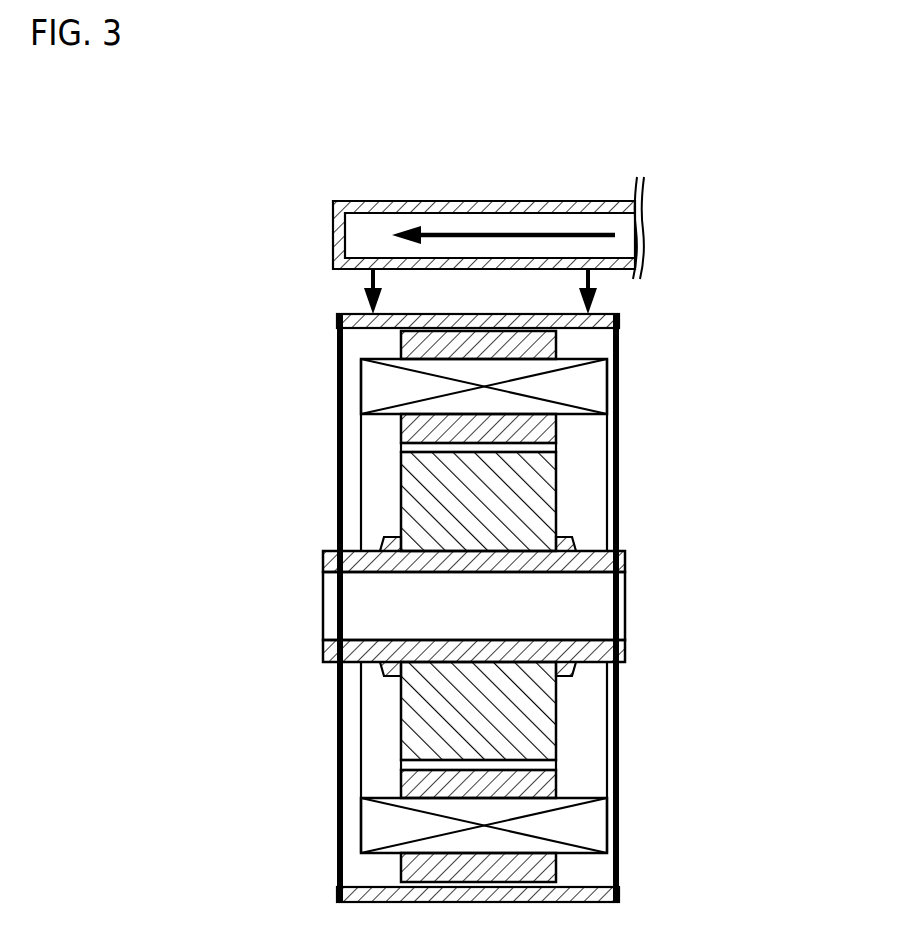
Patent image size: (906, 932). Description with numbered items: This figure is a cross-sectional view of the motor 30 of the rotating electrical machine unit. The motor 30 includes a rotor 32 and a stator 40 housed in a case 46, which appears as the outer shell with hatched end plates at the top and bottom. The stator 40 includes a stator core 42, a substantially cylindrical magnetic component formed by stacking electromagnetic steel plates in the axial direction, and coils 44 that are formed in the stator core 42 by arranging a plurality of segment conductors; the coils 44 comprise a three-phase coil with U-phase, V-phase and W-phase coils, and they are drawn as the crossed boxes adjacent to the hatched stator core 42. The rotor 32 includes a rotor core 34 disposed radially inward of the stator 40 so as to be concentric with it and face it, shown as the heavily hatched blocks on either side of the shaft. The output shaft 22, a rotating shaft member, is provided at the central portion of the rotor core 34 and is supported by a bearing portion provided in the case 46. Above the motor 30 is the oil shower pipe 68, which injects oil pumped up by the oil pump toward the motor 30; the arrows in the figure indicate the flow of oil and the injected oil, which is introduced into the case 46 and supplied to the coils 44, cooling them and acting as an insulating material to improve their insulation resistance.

The output shaft 22 is at (625, 553).
The motor 30 is at (742, 900).
The rotor 32 is at (393, 490).
The rotor core 34 is at (558, 490).
The stator 40 is at (393, 427).
The stator core 42 is at (560, 428).
The coils 44 is at (608, 378).
The case 46 is at (619, 322).
The oil shower pipe 68 is at (332, 201).